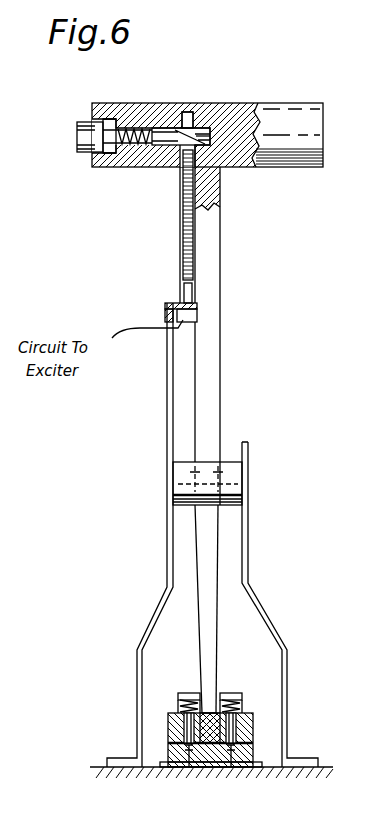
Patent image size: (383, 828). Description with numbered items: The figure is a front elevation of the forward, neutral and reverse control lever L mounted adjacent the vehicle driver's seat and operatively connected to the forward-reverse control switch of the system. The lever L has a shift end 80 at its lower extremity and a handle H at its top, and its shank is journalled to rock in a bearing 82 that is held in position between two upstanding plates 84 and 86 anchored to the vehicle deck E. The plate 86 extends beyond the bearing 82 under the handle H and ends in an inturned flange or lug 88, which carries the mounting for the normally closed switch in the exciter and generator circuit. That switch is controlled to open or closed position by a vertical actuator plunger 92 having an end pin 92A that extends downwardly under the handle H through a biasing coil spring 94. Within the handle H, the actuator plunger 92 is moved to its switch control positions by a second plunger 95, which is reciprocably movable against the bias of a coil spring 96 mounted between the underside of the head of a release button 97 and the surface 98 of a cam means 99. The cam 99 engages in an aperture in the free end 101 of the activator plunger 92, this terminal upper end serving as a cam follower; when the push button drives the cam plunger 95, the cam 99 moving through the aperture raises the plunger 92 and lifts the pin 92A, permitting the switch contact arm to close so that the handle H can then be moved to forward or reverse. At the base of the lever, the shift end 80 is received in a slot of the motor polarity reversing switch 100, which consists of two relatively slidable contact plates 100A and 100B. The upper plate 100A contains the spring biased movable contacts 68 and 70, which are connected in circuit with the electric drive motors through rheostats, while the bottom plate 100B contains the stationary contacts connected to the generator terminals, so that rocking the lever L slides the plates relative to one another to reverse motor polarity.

The handle H is at (272, 112).
The second plunger 95 is at (116, 122).
The coil spring 96 is at (134, 150).
The release button 97 is at (77, 137).
The surface of cam means 98 is at (152, 128).
The cam means 99 is at (187, 112).
The free end of activator plunger 101 is at (207, 137).
The biasing coil spring 94 is at (197, 237).
The vertical actuator plunger 92 is at (194, 292).
The end pin 92A is at (197, 305).
The inturned flange 88 is at (170, 303).
The forward, neutral and reverse control lever L is at (222, 348).
The upstanding plate 86 is at (167, 545).
The upstanding plate 84 is at (248, 547).
The bearing 82 is at (237, 493).
The shift end 80 is at (215, 702).
The spring biased movable contact 68 is at (178, 726).
The spring biased movable contact 70 is at (244, 726).
The motor polarity reversing switch 100 is at (275, 741).
The upper contact plate 100A is at (170, 744).
The bottom contact plate 100B is at (186, 770).
The vehicle deck E is at (312, 760).